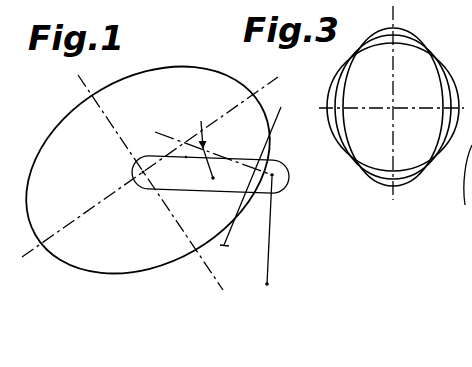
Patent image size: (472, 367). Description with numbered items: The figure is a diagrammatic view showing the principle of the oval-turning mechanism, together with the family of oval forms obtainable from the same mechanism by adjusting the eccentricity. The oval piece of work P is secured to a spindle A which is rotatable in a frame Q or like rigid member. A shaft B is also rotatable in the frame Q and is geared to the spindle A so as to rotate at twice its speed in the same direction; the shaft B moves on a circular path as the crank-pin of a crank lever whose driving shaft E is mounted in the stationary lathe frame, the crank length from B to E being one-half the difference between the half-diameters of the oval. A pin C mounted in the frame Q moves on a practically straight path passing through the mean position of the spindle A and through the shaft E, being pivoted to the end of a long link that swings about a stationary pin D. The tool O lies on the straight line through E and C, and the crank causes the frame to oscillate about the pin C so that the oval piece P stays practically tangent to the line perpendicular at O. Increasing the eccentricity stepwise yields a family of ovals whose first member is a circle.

In FIG. 1, the oval piece of work P is at (207, 64).
In FIG. 1, the spindle A is at (142, 178).
In FIG. 3, the spindle A is at (395, 107).
In FIG. 1, the shaft B is at (216, 174).
In FIG. 1, the frame Q is at (186, 156).
In FIG. 1, the driving shaft E is at (202, 140).
In FIG. 1, the pin C is at (277, 173).
In FIG. 1, the tool O is at (278, 132).
In FIG. 1, the stationary pin D is at (275, 237).